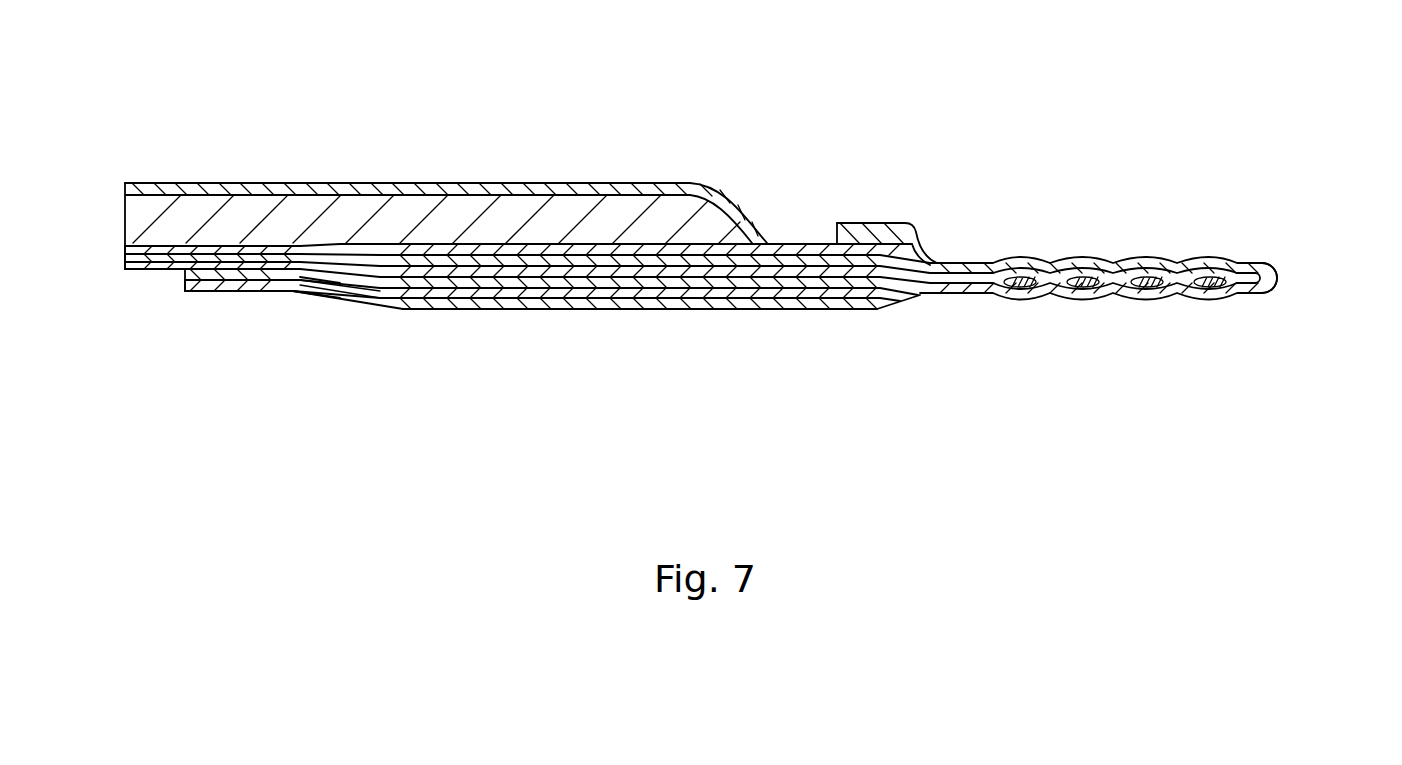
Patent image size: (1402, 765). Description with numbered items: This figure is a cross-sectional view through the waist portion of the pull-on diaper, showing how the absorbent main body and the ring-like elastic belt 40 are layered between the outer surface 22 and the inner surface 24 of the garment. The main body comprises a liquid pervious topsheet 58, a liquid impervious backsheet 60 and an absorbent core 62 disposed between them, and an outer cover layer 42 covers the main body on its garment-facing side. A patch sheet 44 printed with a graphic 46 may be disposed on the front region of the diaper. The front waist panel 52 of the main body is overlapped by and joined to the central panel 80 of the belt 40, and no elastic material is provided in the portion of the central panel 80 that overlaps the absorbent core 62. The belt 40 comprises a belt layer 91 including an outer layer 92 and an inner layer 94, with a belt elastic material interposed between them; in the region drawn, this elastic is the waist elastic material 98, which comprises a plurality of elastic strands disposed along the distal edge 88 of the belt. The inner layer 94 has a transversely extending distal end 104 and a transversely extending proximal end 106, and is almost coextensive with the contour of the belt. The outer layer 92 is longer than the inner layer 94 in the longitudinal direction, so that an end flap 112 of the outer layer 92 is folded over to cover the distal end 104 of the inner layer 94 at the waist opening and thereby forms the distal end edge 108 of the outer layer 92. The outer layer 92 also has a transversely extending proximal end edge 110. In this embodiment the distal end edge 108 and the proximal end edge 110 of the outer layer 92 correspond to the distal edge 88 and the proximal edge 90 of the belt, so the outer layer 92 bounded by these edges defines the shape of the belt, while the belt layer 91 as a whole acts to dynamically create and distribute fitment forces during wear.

The outer surface 22 is at (754, 357).
The inner surface 24 is at (714, 123).
The belt 40 is at (1031, 404).
The outer cover layer 42 is at (140, 275).
The patch sheet 44 is at (493, 293).
The graphic 46 is at (543, 295).
The front waist panel 52 is at (753, 202).
The liquid pervious topsheet 58 is at (518, 185).
The liquid impervious backsheet 60 is at (133, 250).
The absorbent core 62 is at (462, 205).
The central panel 80 is at (627, 327).
The distal edge 88 is at (1282, 272).
The proximal edge 90 is at (190, 292).
The belt layer 91 is at (298, 427).
The outer layer 92 is at (370, 303).
The inner layer 94 is at (287, 303).
The waist elastic material 98 is at (1210, 293).
The distal end 104 is at (1247, 277).
The proximal end 106 is at (178, 273).
The distal end edge 108 is at (1280, 287).
The proximal end edge 110 is at (180, 288).
The end flap 112 is at (1093, 253).